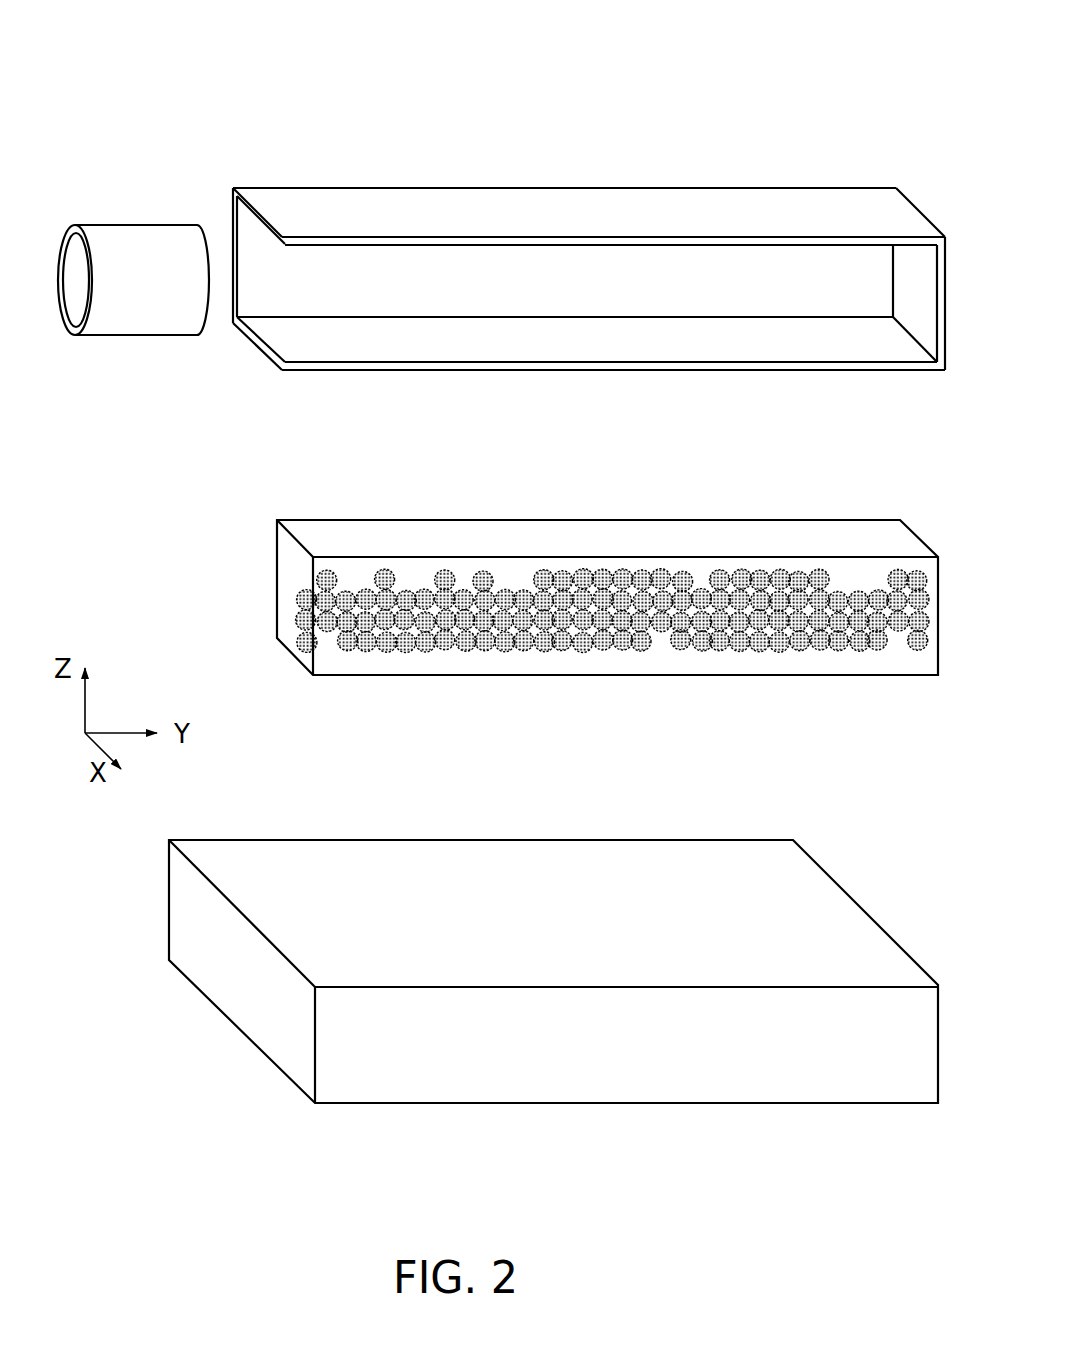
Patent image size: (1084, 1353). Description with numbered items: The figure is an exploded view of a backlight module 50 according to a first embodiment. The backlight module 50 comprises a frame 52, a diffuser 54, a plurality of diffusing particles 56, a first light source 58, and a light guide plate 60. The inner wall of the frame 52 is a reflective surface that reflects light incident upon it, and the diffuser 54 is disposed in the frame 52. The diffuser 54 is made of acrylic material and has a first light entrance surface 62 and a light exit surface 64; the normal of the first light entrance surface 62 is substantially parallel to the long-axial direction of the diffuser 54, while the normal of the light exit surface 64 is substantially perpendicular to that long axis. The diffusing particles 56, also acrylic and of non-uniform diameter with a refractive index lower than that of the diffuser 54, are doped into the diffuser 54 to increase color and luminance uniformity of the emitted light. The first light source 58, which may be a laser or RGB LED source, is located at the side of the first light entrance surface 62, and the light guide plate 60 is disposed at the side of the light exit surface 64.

The backlight module 50 is at (762, 87).
The frame 52 is at (601, 197).
The diffuser 54 is at (634, 540).
The diffusing particles 56 is at (857, 650).
The first light source 58 is at (129, 242).
The light guide plate 60 is at (397, 853).
The first light entrance surface 62 is at (284, 580).
The light exit surface 64 is at (598, 675).